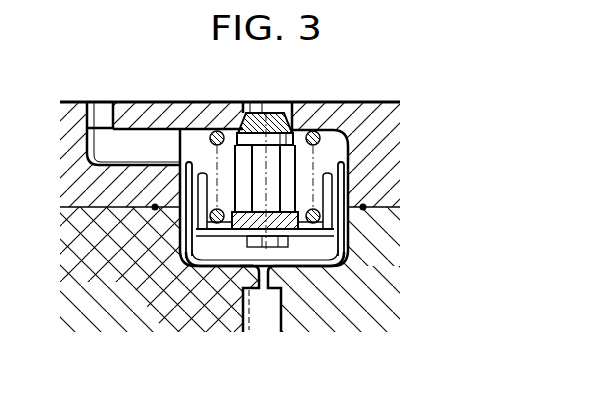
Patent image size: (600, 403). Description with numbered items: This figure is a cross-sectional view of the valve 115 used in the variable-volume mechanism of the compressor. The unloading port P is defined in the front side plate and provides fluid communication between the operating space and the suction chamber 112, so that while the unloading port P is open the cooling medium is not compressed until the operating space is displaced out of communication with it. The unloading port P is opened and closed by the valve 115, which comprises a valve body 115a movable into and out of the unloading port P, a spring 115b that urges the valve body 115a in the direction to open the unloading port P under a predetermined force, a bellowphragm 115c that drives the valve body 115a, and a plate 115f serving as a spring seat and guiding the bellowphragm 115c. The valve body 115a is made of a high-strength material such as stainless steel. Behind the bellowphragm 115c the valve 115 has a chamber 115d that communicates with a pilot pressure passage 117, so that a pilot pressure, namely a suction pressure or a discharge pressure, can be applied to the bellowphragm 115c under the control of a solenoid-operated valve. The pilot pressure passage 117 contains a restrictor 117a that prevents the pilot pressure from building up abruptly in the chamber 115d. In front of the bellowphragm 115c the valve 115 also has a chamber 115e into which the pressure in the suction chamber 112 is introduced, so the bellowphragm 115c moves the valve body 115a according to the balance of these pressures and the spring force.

The suction chamber 112 is at (127, 143).
The valve 115 is at (260, 154).
The valve body 115a is at (277, 128).
The spring 115b is at (215, 131).
The bellowphragm 115c is at (188, 235).
The chamber 115d is at (217, 252).
The chamber 115e is at (297, 157).
The plate 115f is at (300, 232).
The pilot pressure passage 117 is at (268, 322).
The restrictor 117a is at (258, 273).
The unloading port P is at (268, 107).